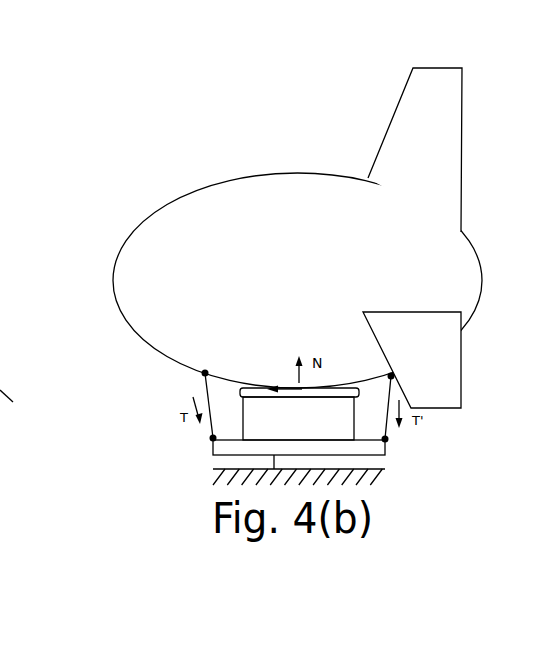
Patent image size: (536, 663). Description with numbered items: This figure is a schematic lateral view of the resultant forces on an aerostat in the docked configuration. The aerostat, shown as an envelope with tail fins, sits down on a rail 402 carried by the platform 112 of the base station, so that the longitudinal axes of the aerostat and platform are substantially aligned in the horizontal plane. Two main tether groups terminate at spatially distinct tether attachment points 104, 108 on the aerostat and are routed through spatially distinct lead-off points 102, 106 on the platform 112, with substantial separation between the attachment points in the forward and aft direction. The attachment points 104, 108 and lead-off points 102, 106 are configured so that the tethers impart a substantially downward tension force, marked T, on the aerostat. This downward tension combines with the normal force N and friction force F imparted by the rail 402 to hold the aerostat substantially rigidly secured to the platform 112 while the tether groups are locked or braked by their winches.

The tether attachment point 104 is at (205, 373).
The tether attachment point 108 is at (391, 376).
The rail 402 is at (268, 389).
The lead-off point 102 is at (213, 438).
The lead-off point 106 is at (366, 432).
The platform 112 is at (213, 448).